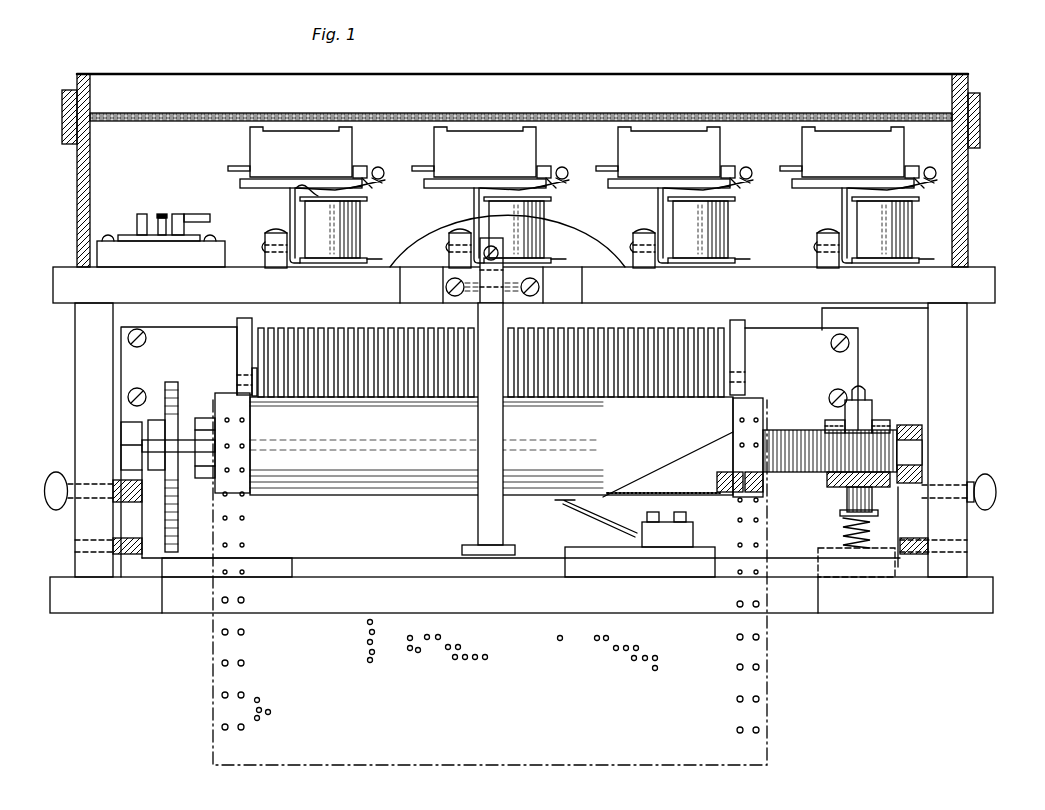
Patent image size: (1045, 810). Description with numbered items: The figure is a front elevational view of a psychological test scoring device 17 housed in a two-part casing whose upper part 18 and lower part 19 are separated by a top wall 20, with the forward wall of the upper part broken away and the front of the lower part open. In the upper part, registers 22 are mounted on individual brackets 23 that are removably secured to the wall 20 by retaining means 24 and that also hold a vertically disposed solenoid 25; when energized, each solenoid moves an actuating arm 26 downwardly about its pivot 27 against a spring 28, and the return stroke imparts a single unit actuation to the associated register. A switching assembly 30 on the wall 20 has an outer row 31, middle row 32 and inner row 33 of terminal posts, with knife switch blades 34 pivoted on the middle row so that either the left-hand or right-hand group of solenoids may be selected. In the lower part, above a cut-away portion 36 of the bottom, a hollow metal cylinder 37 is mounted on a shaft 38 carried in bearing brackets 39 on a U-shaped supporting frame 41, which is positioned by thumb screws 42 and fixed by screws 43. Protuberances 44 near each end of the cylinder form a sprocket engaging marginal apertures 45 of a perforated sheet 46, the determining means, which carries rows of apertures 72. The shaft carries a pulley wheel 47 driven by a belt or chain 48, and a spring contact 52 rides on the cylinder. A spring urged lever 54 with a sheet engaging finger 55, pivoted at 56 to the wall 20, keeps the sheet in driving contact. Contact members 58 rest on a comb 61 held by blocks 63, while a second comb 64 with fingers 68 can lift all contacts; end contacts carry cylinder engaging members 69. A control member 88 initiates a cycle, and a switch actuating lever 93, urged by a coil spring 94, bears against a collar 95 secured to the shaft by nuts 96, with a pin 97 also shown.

The psychological test scoring device 17 is at (580, 112).
The upper part of the casing 18 is at (75, 344).
The lower part of the casing 19 is at (77, 192).
The top wall 20 is at (524, 259).
The register 22 is at (318, 138).
The bracket 23 is at (290, 210).
The retaining means 24 is at (266, 238).
The solenoid 25 is at (365, 215).
The actuating arm 26 is at (308, 188).
The pivot 27 is at (294, 184).
The spring 28 is at (369, 166).
The switching assembly 30 is at (173, 250).
The outer row of terminal posts 31 is at (140, 214).
The middle row of terminal posts 32 is at (162, 214).
The inner row of terminal posts 33 is at (180, 214).
The knife switch blades 34 is at (198, 216).
The cut-away portion 36 is at (192, 613).
The hollow metal cylinder 37 is at (392, 490).
The shaft 38 is at (802, 471).
The bearing brackets 39 is at (116, 422).
The U-shaped supporting frame 41 is at (204, 570).
The thumb screws 42 is at (56, 472).
The screws 43 is at (116, 540).
The protuberances 44 is at (226, 392).
The apertures 45 is at (224, 665).
The perforated sheet 46 is at (768, 692).
The pulley wheel 47 is at (170, 420).
The belt or chain 48 is at (172, 382).
The spring contact 52 is at (600, 520).
The spring urged lever 54 is at (503, 440).
The sheet engaging finger 55 is at (486, 555).
The pivot 56 is at (510, 268).
The contact members 58 is at (346, 385).
The comb 61 is at (790, 328).
The blocks 63 is at (153, 325).
The second comb 64 is at (748, 345).
The fingers 68 is at (238, 322).
The cylinder engaging member 69 is at (252, 378).
The apertures 72 is at (368, 632).
The control member 88 is at (736, 318).
The switch actuating lever 93 is at (840, 512).
The coil spring 94 is at (843, 534).
The collar 95 is at (872, 400).
The nuts 96 is at (832, 420).
The pin 97 is at (860, 388).